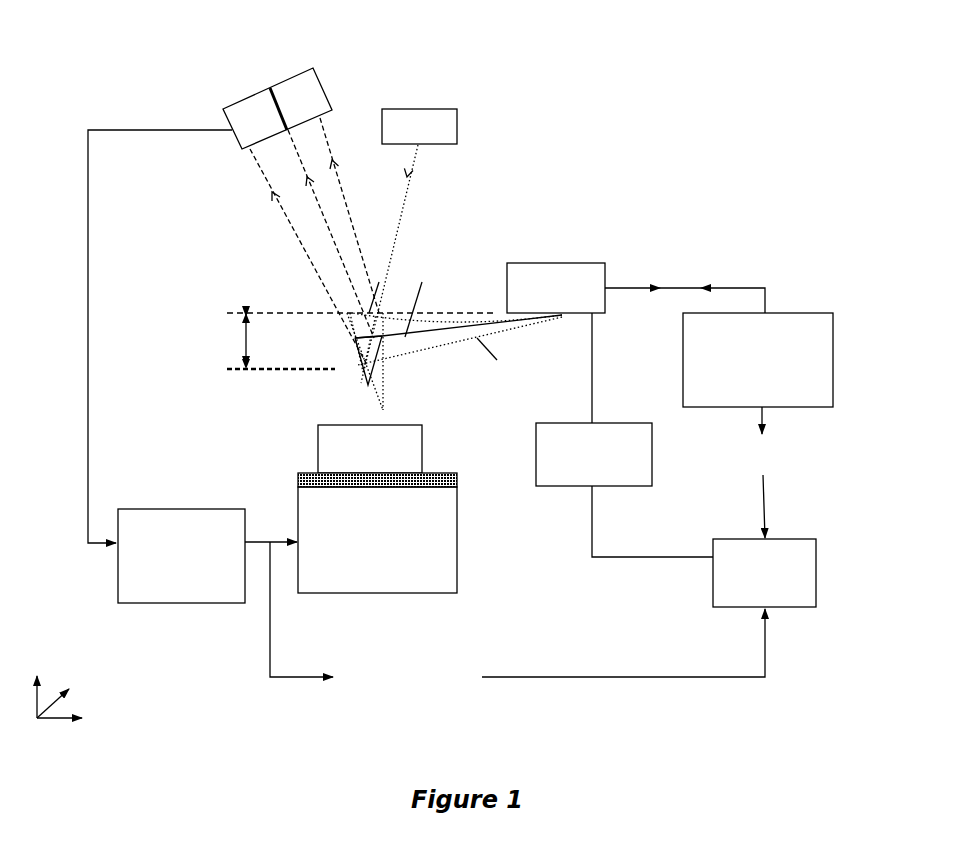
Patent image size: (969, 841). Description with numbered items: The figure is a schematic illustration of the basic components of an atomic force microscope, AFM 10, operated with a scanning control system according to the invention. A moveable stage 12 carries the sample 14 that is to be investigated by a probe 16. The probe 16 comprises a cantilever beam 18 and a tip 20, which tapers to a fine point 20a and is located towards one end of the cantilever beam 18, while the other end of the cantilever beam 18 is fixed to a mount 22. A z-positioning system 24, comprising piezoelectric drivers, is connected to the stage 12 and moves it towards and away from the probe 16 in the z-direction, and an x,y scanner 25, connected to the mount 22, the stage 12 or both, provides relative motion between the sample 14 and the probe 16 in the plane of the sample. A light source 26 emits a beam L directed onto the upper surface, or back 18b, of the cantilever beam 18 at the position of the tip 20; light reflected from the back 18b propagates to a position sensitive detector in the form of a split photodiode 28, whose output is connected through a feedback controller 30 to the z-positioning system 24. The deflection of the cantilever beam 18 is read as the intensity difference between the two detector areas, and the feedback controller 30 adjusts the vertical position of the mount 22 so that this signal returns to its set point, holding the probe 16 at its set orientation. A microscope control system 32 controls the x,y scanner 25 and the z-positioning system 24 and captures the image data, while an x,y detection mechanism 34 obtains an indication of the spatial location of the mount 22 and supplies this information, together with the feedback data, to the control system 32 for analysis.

The AFM 10 is at (153, 51).
The moveable stage 12 is at (298, 480).
The sample 14 is at (317, 450).
The probe 16 is at (394, 364).
The cantilever beam 18 is at (420, 352).
The upper surface (back) of the cantilever beam 18b is at (352, 347).
The tip 20 is at (372, 390).
The fine point 20a is at (383, 409).
The mount 22 is at (555, 263).
The z-positioning system 24 is at (427, 593).
The (x,y) scanner 25 is at (546, 486).
The light source 26 is at (457, 128).
The split photodiode 28 is at (235, 88).
The feedback controller 30 is at (154, 587).
The microscope control system 32 is at (790, 607).
The x,y detection mechanism 34 is at (808, 312).